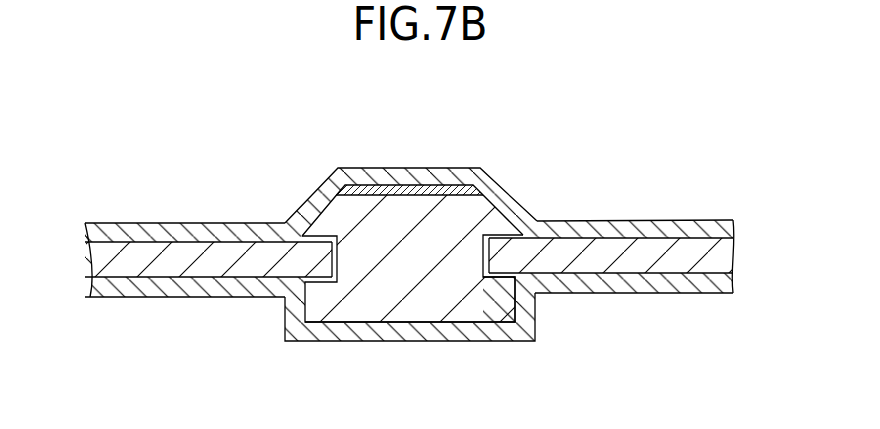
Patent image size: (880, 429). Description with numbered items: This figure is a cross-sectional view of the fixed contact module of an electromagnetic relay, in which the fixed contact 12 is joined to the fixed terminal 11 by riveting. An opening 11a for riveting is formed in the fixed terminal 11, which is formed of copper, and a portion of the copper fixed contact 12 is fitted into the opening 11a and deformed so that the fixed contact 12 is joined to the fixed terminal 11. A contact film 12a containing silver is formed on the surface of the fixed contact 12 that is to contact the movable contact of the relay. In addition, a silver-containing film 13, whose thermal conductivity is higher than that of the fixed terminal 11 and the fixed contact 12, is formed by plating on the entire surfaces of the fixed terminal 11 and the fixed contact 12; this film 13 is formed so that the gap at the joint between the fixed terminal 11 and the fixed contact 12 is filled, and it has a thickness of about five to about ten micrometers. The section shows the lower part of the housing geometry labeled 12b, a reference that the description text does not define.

The fixed terminal 11 is at (205, 257).
The opening 11a is at (328, 260).
The fixed contact 12 is at (406, 230).
The contact film 12a is at (445, 189).
The lower portion of housing 12b is at (502, 303).
The silver-containing film 13 is at (638, 232).